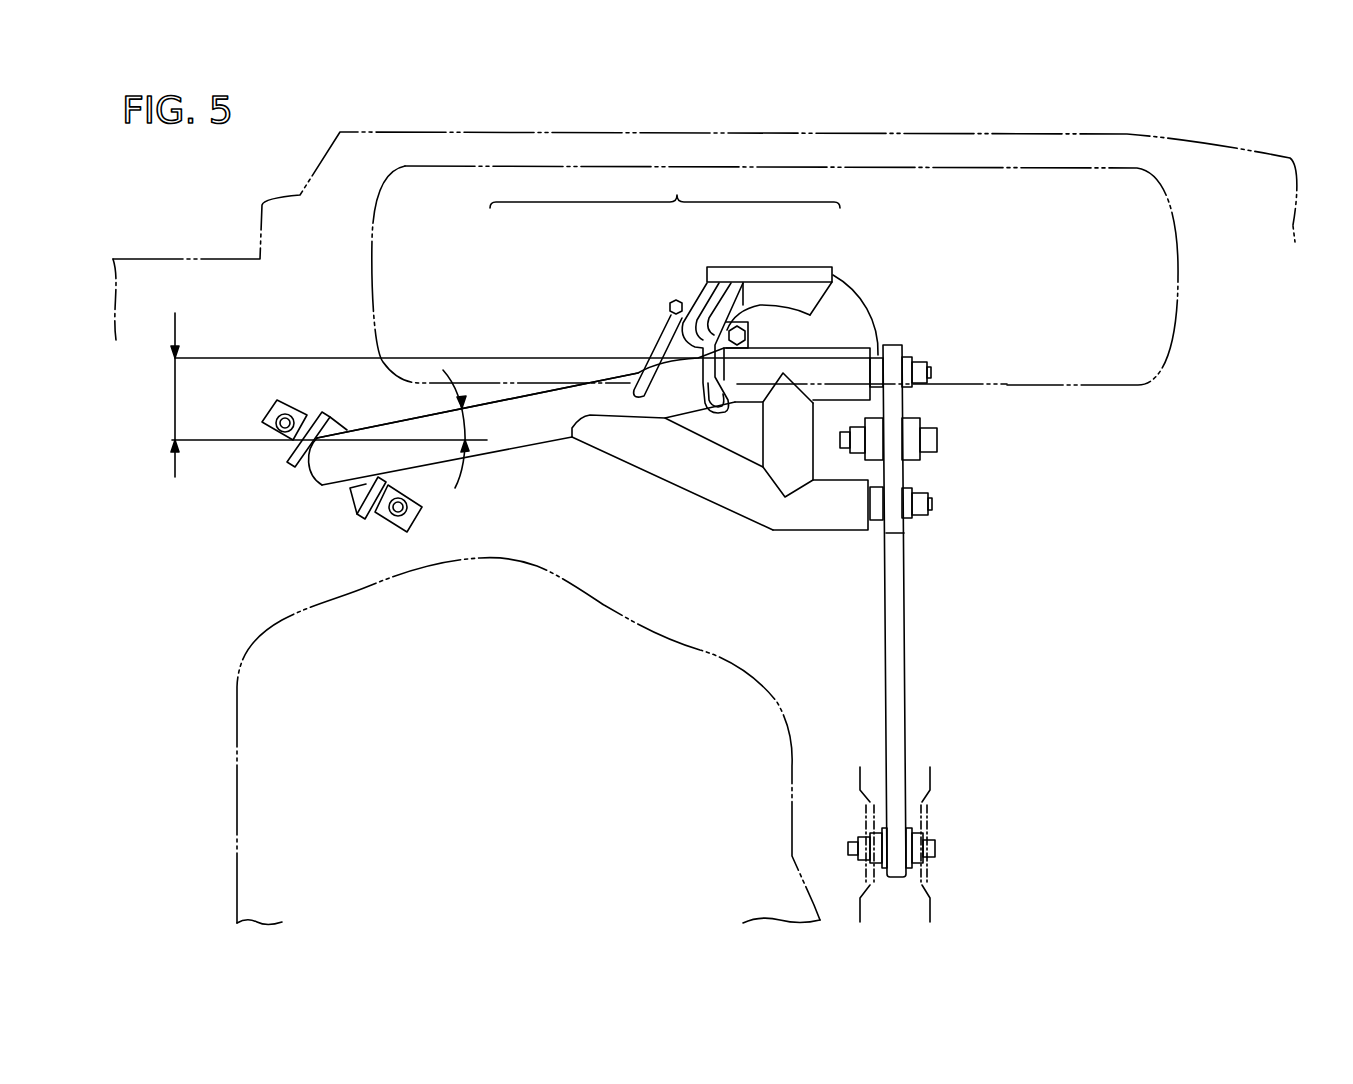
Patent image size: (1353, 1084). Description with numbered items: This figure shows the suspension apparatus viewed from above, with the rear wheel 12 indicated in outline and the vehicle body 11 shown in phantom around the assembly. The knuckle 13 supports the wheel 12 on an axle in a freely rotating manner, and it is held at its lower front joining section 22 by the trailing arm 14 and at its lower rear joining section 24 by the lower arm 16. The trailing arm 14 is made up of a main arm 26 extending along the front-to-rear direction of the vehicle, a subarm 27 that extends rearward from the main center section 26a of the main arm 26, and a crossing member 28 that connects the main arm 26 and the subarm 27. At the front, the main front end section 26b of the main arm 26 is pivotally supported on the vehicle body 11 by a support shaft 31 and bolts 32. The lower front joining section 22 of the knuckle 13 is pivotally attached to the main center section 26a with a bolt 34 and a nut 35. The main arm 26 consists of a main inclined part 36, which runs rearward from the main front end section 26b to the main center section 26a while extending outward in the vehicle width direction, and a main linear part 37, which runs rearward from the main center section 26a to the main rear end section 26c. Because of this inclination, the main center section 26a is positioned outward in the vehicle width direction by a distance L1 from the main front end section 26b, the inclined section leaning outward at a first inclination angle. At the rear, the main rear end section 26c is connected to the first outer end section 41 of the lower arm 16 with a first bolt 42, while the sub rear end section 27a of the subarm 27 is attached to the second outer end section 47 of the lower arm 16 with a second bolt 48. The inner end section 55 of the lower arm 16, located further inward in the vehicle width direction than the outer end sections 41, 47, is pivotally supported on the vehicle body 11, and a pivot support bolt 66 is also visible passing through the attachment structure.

The vehicle body 11 is at (955, 133).
The wheel 12 is at (1053, 167).
The knuckle 13 is at (828, 270).
The trailing arm 14 is at (488, 403).
The lower arm 16 is at (907, 680).
The lower front joining section 22 is at (703, 296).
The lower rear joining section 24 is at (863, 325).
The main arm 26 is at (665, 190).
The main center section 26a is at (692, 398).
The main front end section 26b is at (308, 472).
The main rear end section 26c is at (863, 357).
The subarm 27 is at (708, 487).
The sub rear end section 27a is at (858, 522).
The crossing member 28 is at (788, 470).
The support shaft 31 is at (380, 500).
The bolts 32 is at (280, 430).
The bolt 34 is at (677, 307).
The nut 35 is at (742, 336).
The main inclined part 36 is at (521, 413).
The main linear part 37 is at (790, 360).
The first outer end section 41 is at (907, 387).
The first bolt 42 is at (932, 370).
The second outer end section 47 is at (905, 528).
The second bolt 48 is at (932, 505).
The inner end section 55 is at (923, 860).
The pivot support bolt 66 is at (935, 443).
The distance L1 is at (172, 393).